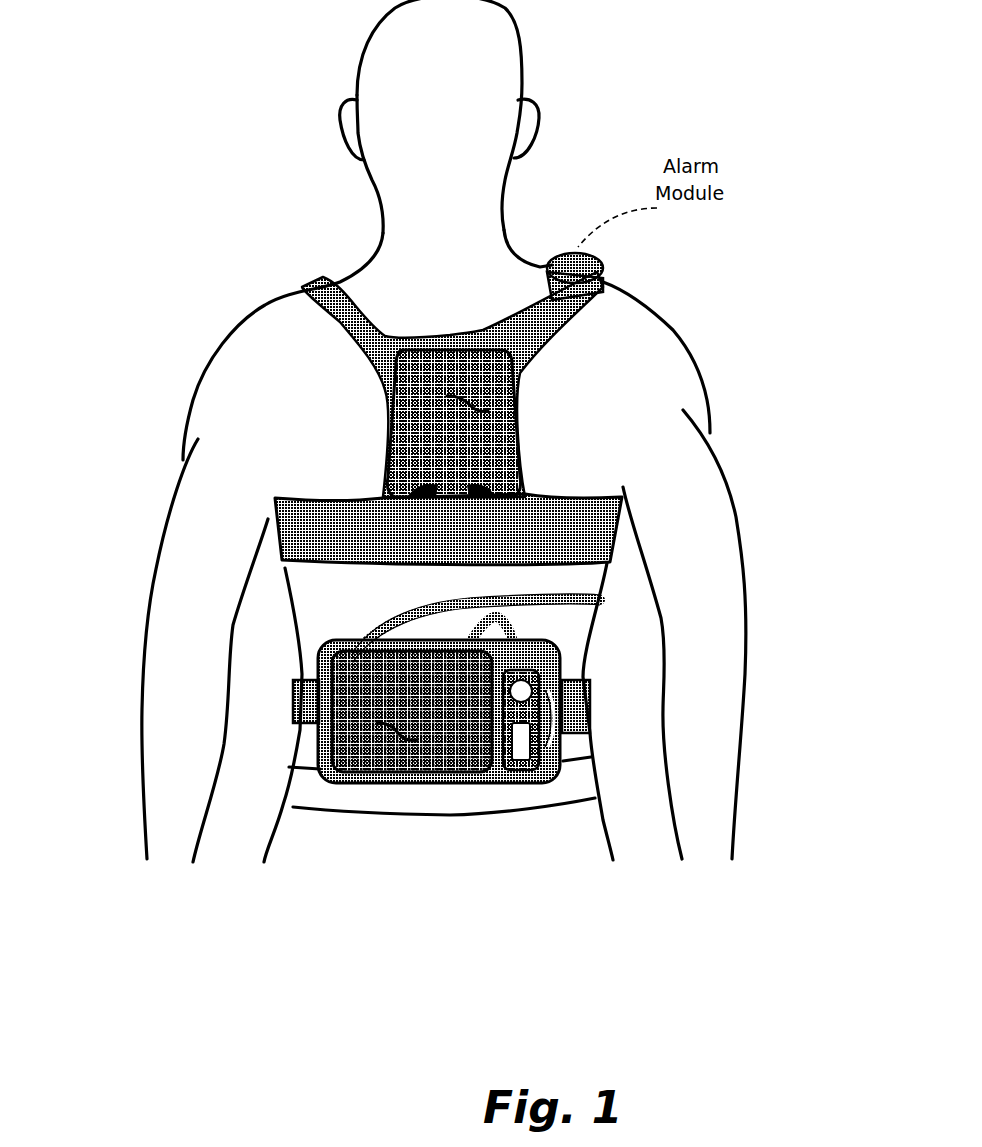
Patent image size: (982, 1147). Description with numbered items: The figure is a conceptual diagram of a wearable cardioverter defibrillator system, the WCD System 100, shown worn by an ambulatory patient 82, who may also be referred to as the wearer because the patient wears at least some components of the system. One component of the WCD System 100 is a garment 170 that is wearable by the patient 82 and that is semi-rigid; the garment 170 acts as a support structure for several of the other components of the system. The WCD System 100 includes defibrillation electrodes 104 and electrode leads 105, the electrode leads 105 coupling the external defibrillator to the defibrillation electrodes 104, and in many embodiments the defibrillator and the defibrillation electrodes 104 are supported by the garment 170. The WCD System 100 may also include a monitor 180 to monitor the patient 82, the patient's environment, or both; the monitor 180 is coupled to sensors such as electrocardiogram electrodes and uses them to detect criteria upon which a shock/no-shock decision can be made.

The patient 82 is at (193, 374).
The WCD System 100 is at (393, 742).
The defibrillation electrodes 104 is at (477, 400).
The electrode leads 105 is at (602, 604).
The garment 170 is at (305, 287).
The monitor 180 is at (520, 774).